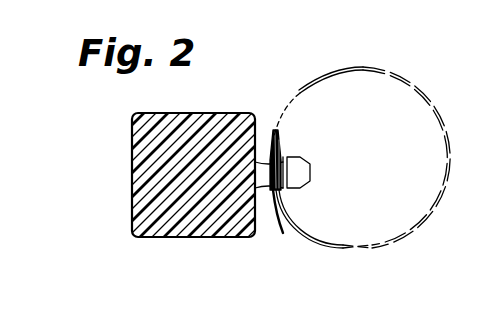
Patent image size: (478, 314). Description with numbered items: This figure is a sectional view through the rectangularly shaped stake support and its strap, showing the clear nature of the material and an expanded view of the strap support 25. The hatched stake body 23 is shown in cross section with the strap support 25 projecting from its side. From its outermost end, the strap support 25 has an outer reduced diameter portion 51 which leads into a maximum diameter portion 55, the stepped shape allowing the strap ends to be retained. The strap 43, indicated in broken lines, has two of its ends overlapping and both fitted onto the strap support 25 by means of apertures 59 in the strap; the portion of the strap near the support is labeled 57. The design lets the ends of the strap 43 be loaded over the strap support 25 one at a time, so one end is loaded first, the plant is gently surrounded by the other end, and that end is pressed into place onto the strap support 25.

The block 23 is at (132, 150).
The strap support 25 is at (309, 151).
The strap 43 is at (364, 68).
The outer reduced diameter portion 51 is at (311, 166).
The maximum diameter portion 55 is at (300, 188).
The bundle 57 is at (282, 145).
The apertures 59 is at (268, 192).